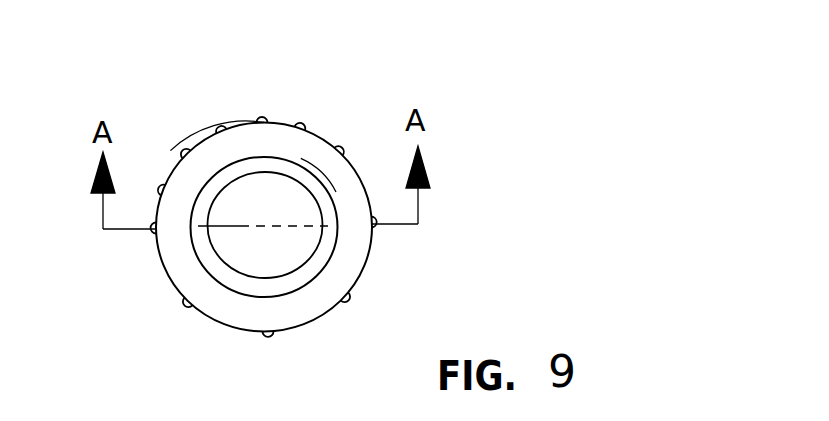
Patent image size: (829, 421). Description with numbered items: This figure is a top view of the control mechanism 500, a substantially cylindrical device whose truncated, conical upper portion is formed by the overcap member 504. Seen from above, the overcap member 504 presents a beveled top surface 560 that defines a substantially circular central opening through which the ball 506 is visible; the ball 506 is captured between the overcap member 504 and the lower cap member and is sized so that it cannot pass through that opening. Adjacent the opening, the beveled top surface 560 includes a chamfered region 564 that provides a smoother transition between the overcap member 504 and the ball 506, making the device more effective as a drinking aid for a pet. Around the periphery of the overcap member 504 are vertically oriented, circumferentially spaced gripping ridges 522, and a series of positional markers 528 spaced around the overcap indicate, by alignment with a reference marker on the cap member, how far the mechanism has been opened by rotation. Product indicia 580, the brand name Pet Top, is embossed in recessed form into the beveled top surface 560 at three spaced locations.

The control mechanism 500 is at (361, 97).
The overcap member 504 is at (222, 127).
The ball 506 is at (290, 245).
The gripping ridges 522 is at (268, 116).
The positional markers 528 is at (308, 122).
The beveled top surface 560 is at (337, 183).
The chamfered region 564 is at (303, 180).
The product indicia 580 is at (168, 263).